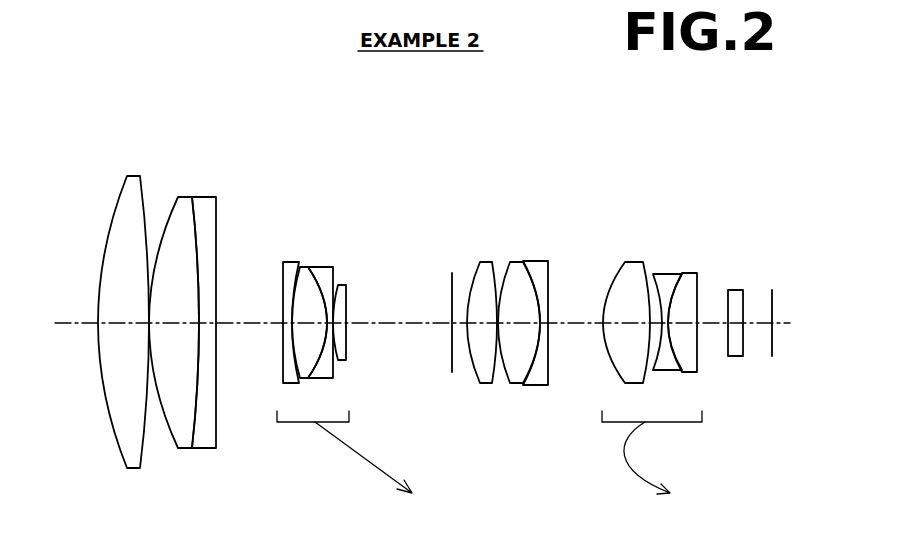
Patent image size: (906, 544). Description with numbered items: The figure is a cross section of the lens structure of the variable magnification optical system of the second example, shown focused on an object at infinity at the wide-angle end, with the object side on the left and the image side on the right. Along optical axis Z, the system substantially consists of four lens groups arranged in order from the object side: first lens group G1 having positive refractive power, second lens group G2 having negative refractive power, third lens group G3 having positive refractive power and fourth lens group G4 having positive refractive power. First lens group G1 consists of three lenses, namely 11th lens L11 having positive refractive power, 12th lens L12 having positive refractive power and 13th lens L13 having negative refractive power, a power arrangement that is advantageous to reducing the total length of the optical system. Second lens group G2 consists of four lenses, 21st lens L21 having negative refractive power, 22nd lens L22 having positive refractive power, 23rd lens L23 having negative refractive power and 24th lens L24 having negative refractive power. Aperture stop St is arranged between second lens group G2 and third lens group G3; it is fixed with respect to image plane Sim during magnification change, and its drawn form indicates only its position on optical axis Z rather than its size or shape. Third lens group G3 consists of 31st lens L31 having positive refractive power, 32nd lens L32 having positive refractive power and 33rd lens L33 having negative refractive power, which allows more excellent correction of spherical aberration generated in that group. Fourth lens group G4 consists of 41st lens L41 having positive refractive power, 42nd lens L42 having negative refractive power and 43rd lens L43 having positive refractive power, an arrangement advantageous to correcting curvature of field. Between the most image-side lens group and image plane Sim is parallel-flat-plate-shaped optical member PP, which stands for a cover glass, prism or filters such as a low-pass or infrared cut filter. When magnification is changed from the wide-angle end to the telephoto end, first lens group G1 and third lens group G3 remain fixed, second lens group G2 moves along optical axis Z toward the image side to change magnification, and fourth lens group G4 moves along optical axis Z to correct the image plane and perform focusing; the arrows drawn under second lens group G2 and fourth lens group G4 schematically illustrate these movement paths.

The first lens group G1 is at (87, 97).
The 11th lens L11 is at (132, 176).
The 12th lens L12 is at (183, 197).
The 13th lens L13 is at (203, 197).
The second lens group G2 is at (387, 166).
The 21st lens L21 is at (290, 262).
The 22nd lens L22 is at (303, 266).
The 23rd lens L23 is at (322, 267).
The 24th lens L24 is at (340, 285).
The aperture stop St is at (452, 272).
The third lens group G3 is at (435, 166).
The 31st lens L31 is at (483, 262).
The 32nd lens L32 is at (518, 262).
The 33rd lens L33 is at (535, 260).
The fourth lens group G4 is at (575, 166).
The 41st lens L41 is at (630, 262).
The 42nd lens L42 is at (665, 274).
The 43rd lens L43 is at (686, 273).
The optical member PP is at (735, 290).
The image plane Sim is at (772, 290).
The optical axis Z is at (58, 326).